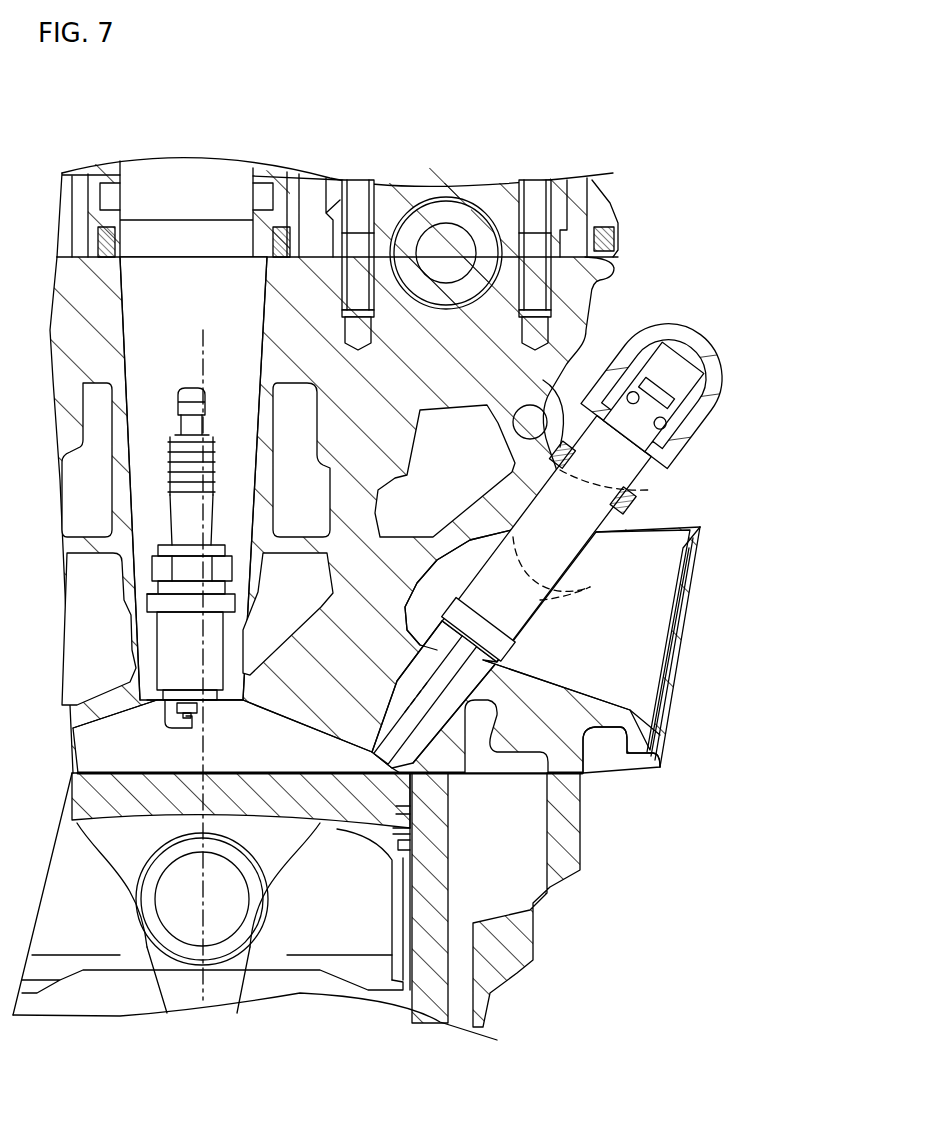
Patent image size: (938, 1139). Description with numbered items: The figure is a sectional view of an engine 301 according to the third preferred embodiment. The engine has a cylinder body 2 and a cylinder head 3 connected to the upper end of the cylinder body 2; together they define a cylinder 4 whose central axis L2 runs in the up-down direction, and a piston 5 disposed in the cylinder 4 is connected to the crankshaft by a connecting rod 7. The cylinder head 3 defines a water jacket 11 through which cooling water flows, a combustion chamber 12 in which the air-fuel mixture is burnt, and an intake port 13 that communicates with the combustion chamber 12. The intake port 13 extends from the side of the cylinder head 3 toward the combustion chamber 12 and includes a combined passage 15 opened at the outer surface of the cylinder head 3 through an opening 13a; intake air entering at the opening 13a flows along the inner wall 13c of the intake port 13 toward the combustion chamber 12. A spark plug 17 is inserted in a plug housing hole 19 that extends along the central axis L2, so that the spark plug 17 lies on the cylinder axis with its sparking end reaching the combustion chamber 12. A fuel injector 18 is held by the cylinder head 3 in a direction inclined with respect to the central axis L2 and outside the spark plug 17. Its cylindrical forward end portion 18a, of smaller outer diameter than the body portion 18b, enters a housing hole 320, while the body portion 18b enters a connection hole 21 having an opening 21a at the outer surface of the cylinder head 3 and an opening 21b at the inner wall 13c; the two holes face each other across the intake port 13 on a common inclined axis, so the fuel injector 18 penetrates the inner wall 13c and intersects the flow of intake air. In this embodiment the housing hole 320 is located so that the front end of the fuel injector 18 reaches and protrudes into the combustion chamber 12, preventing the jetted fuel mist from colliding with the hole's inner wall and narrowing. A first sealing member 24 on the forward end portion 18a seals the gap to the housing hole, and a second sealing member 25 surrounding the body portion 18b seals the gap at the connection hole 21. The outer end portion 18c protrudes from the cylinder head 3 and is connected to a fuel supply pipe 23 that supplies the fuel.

The engine 301 is at (98, 130).
The cylinder body 2 is at (523, 948).
The cylinder head 3 is at (602, 265).
The cylinder 4 is at (78, 1000).
The piston 5 is at (130, 960).
The connecting rod 7 is at (213, 987).
The water jacket 11 is at (617, 776).
The combustion chamber 12 is at (97, 757).
The intake port 13 is at (660, 587).
The opening 13a is at (667, 723).
The inner wall 13c is at (623, 712).
The combined passage 15 is at (650, 610).
The spark plug 17 is at (160, 637).
The fuel injector 18 is at (730, 400).
The forward end portion 18a is at (378, 756).
The body portion 18b is at (530, 612).
The outer end portion 18c is at (648, 443).
The plug housing hole 19 is at (153, 652).
The connection hole 21 is at (575, 557).
The opening 21a is at (648, 490).
The opening 21b is at (573, 591).
The fuel supply pipe 23 is at (700, 345).
The first sealing member 24 is at (450, 777).
The second sealing member 25 is at (630, 512).
The housing hole 320 is at (497, 645).
The central axis L2 is at (200, 988).